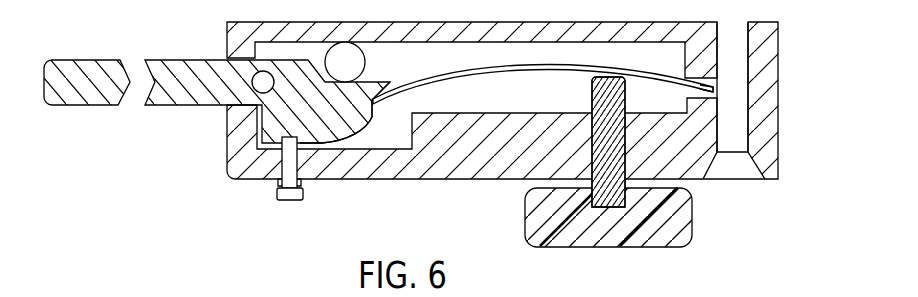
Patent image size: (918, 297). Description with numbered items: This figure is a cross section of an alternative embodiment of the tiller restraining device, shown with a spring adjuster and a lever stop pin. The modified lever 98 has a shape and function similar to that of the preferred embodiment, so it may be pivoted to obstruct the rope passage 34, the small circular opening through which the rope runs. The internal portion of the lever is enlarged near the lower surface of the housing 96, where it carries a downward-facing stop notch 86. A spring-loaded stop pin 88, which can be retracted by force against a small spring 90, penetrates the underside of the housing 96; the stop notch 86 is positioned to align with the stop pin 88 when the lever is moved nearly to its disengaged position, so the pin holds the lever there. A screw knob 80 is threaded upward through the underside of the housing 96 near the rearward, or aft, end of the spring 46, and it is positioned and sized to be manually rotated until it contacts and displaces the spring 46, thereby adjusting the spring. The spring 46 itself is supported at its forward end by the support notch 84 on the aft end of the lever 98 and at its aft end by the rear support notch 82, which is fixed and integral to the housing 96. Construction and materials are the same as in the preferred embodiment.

The rope passage 34 is at (365, 62).
The spring 46 is at (498, 75).
The screw knob 80 is at (694, 222).
The rear support notch 82 is at (712, 89).
The support notch 84 is at (395, 92).
The stop notch 86 is at (315, 143).
The stop pin 88 is at (280, 193).
The spring 90 is at (302, 186).
The housing 96 is at (441, 180).
The modified lever 98 is at (195, 106).